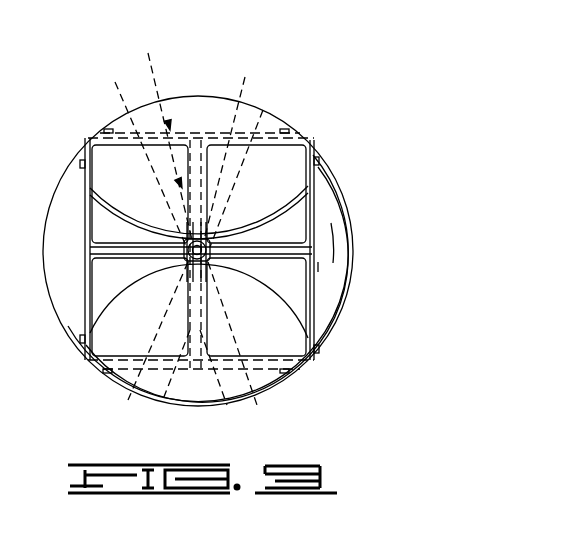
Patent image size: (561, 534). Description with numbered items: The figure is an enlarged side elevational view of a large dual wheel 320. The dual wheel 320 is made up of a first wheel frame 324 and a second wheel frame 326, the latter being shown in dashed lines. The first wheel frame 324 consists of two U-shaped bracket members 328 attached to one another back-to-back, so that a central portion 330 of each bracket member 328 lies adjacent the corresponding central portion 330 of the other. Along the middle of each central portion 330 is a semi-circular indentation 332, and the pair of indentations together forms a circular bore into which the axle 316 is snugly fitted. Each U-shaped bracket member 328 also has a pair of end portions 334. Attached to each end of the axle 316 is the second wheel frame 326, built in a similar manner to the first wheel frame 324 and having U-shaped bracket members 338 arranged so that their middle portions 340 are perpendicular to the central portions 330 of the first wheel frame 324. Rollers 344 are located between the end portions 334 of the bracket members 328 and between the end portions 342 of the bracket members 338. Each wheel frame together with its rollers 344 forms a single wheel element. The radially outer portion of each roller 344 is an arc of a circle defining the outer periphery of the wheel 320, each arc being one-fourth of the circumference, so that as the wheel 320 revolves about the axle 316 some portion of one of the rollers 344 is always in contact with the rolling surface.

The axle 316 is at (215, 243).
The dual wheel 320 is at (213, 84).
The first wheel frame 324 is at (103, 273).
The second wheel frame 326 is at (134, 153).
The U-shaped bracket member 328 is at (324, 212).
The central portion 330 is at (137, 243).
The semi-circular indentation 332 is at (190, 262).
The end portion 334 is at (313, 190).
The U-shaped bracket member 338 is at (208, 202).
The middle portion 340 is at (140, 402).
The end portion 342 is at (130, 131).
The roller 344 is at (182, 96).